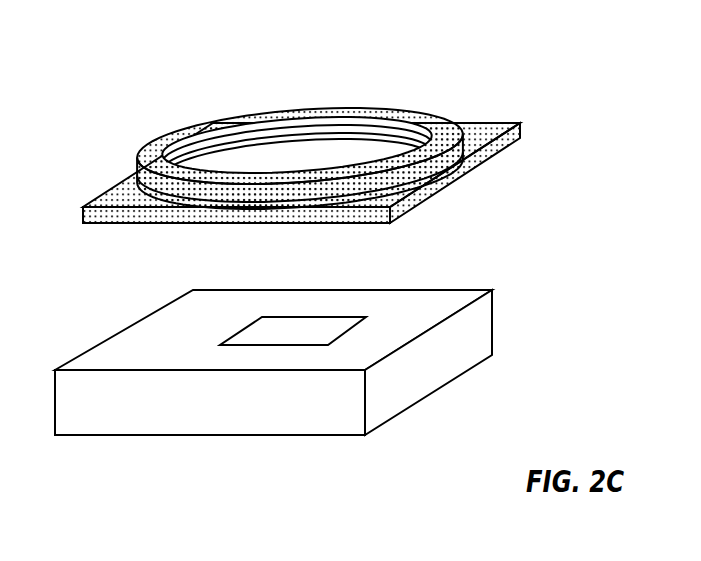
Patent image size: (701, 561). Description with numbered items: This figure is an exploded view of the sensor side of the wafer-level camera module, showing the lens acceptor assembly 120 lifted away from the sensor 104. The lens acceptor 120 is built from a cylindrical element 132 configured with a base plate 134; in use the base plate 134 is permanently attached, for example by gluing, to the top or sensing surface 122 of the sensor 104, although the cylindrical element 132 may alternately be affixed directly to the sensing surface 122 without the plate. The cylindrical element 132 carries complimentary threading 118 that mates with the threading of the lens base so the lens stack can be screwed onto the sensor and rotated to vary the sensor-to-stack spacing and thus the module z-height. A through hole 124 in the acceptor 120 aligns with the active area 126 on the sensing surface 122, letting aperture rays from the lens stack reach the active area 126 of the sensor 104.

The sensor 104 is at (196, 414).
The complimentary threading 118 is at (250, 131).
The lens acceptor assembly 120 is at (285, 119).
The sensing surface 122 is at (273, 330).
The through hole 124 is at (327, 140).
The active area 126 is at (303, 316).
The cylindrical element 132 is at (300, 112).
The base plate 134 is at (485, 122).